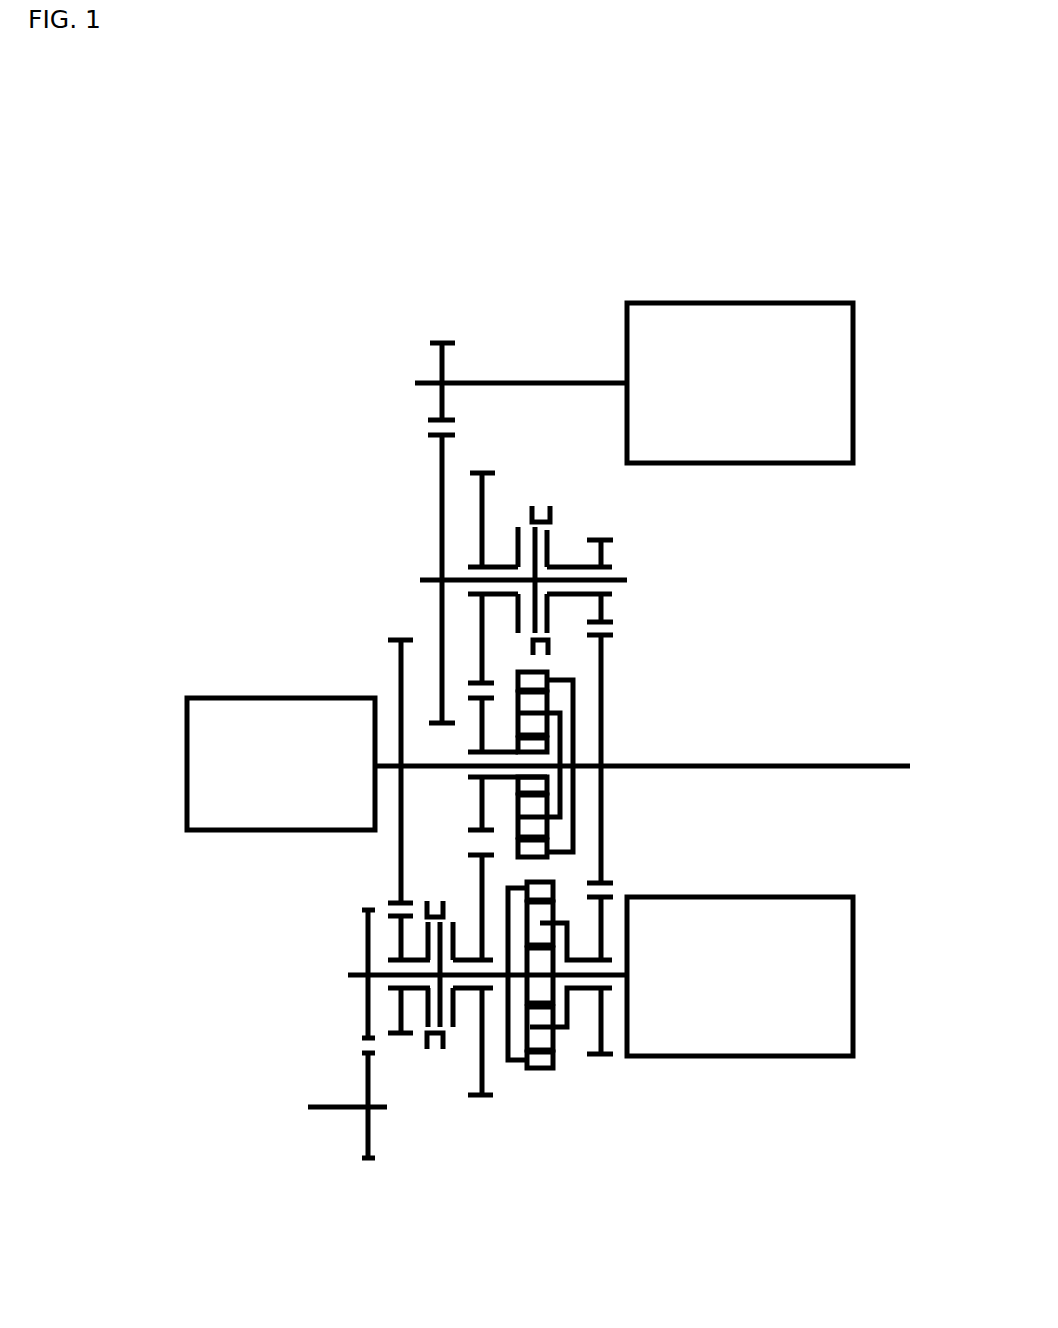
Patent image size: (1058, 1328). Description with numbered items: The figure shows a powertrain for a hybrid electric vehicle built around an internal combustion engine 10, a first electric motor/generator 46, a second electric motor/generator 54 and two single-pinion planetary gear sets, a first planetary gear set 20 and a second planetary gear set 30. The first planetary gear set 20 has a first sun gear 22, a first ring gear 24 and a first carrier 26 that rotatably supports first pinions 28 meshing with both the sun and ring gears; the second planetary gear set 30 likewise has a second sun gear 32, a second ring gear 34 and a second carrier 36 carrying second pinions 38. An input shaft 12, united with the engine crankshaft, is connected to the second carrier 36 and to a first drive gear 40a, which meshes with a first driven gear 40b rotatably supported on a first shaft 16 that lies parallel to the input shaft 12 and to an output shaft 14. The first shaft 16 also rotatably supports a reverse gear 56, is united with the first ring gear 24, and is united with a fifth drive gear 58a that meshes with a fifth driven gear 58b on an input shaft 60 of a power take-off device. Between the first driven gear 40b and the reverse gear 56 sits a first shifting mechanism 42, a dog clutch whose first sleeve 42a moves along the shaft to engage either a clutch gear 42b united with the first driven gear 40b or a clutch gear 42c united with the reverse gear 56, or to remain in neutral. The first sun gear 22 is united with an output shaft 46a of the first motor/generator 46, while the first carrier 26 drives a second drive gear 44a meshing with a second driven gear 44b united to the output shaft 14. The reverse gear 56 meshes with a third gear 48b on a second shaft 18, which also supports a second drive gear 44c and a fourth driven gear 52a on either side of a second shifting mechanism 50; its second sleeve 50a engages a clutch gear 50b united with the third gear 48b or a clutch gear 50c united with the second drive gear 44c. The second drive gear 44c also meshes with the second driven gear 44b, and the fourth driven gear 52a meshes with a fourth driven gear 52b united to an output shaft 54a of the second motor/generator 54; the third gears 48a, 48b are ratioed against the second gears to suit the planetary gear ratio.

The internal combustion engine 10 is at (227, 697).
The input shaft 12 is at (385, 758).
The output shaft 14 is at (847, 766).
The first shaft 16 is at (396, 981).
The second shaft 18 is at (420, 578).
The first planetary gear set 20 is at (545, 1100).
The first sun gear 22 is at (557, 960).
The first ring gear 24 is at (558, 1040).
The first carrier 26 is at (557, 1030).
The first pinions 28 is at (570, 1025).
The second planetary gear set 30 is at (572, 862).
The second sun gear 32 is at (550, 745).
The second ring gear 34 is at (552, 672).
The second carrier 36 is at (565, 705).
The second pinions 38 is at (550, 830).
The first drive gear 40a is at (398, 803).
The first driven gear 40b is at (400, 1010).
The first shifting mechanism 42 is at (428, 1065).
The first sleeve 42a is at (427, 1048).
The clutch gear 42b is at (425, 1030).
The clutch gear 42c is at (482, 1053).
The second drive gear 44a is at (607, 1058).
The second driven gear 44b is at (603, 650).
The second drive gear 44c is at (603, 607).
The first electric motor/generator 46 is at (780, 1057).
The output shaft of first motor/generator 46a is at (612, 968).
The third gear 48a is at (468, 698).
The third gear 48b is at (480, 500).
The second shifting mechanism 50 is at (531, 490).
The second sleeve 50a is at (548, 528).
The clutch gear 50b is at (518, 527).
The clutch gear 50c is at (560, 530).
The fourth driven gear 52a is at (440, 525).
The fourth driven gear 52b is at (437, 362).
The second electric motor/generator 54 is at (693, 303).
The output shaft of second motor/generator 54a is at (588, 383).
The reverse gear 56 is at (480, 878).
The fifth drive gear 58a is at (365, 937).
The fifth driven gear 58b is at (367, 1145).
The input shaft of power take-off device 60 is at (310, 1107).